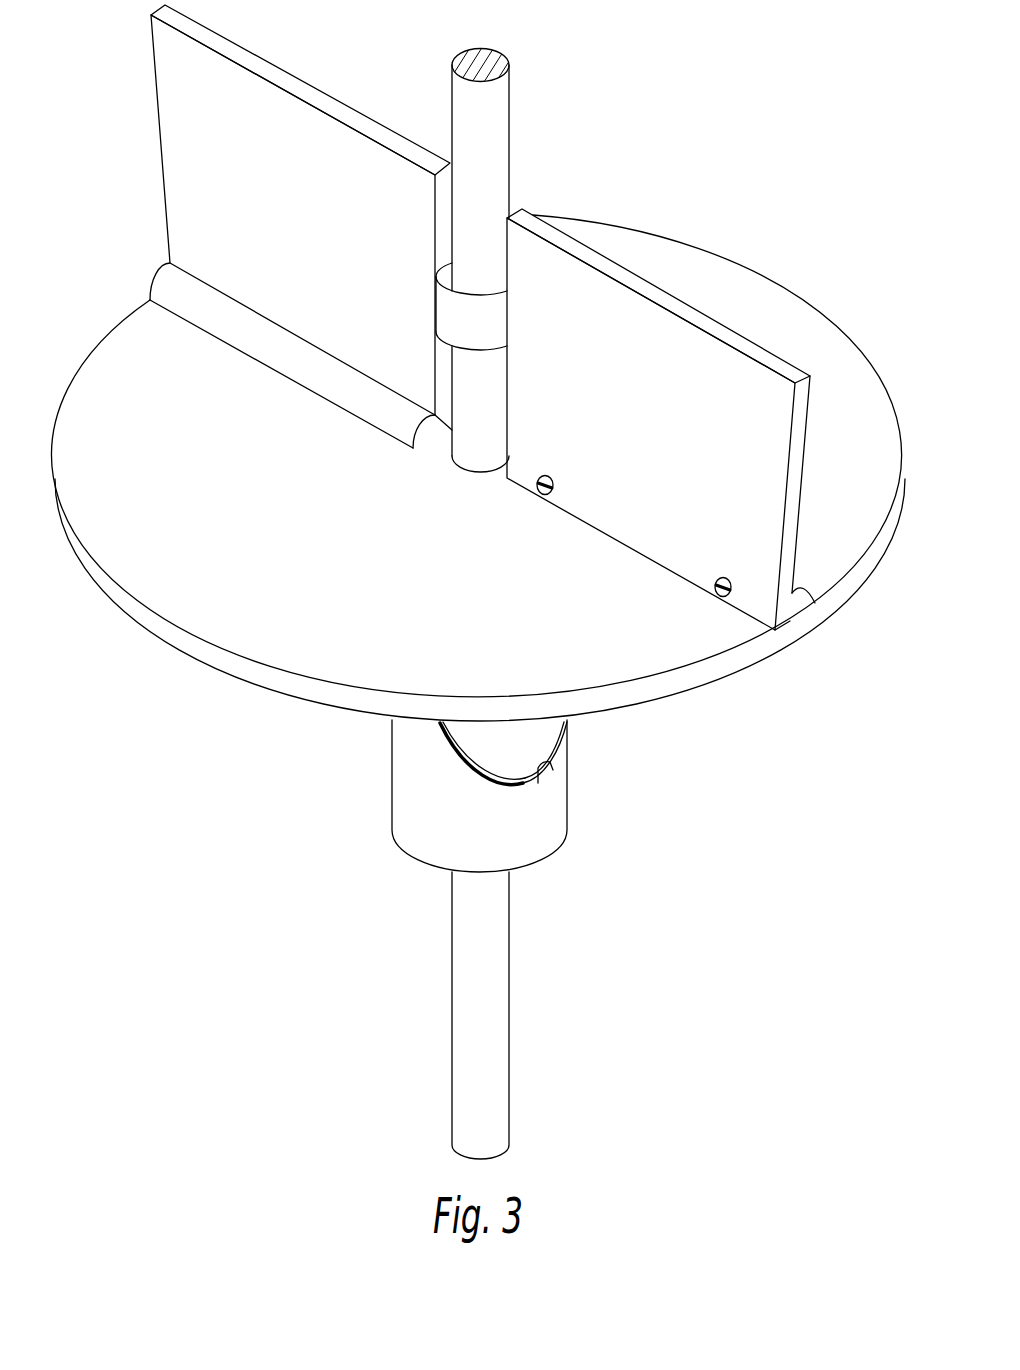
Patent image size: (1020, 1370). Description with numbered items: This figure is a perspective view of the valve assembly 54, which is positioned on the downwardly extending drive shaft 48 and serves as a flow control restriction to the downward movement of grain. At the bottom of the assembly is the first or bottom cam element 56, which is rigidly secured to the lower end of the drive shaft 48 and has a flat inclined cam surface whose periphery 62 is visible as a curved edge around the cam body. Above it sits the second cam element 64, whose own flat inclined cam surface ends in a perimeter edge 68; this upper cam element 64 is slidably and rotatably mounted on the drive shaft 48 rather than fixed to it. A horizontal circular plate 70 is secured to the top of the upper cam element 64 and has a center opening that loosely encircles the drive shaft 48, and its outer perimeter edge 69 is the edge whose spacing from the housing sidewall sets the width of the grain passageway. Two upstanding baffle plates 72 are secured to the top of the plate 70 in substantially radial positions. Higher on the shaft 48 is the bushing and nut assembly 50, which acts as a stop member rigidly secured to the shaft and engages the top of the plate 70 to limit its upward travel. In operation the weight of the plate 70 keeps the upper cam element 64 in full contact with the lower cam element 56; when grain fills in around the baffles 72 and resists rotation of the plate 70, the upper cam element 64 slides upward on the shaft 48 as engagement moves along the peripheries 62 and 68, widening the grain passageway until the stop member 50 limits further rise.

The drive shaft 48 is at (510, 985).
The bushing and nut assembly 50 is at (492, 325).
The valve assembly 54 is at (450, 796).
The first or bottom cam element 56 is at (423, 784).
The periphery of the cam surface 62 is at (450, 740).
The second cam element 64 is at (538, 738).
The perimeter edge 68 is at (547, 763).
The perimeter edge of plate 69 is at (240, 670).
The horizontal circular plate 70 is at (358, 561).
The baffle plate 72 is at (308, 85).